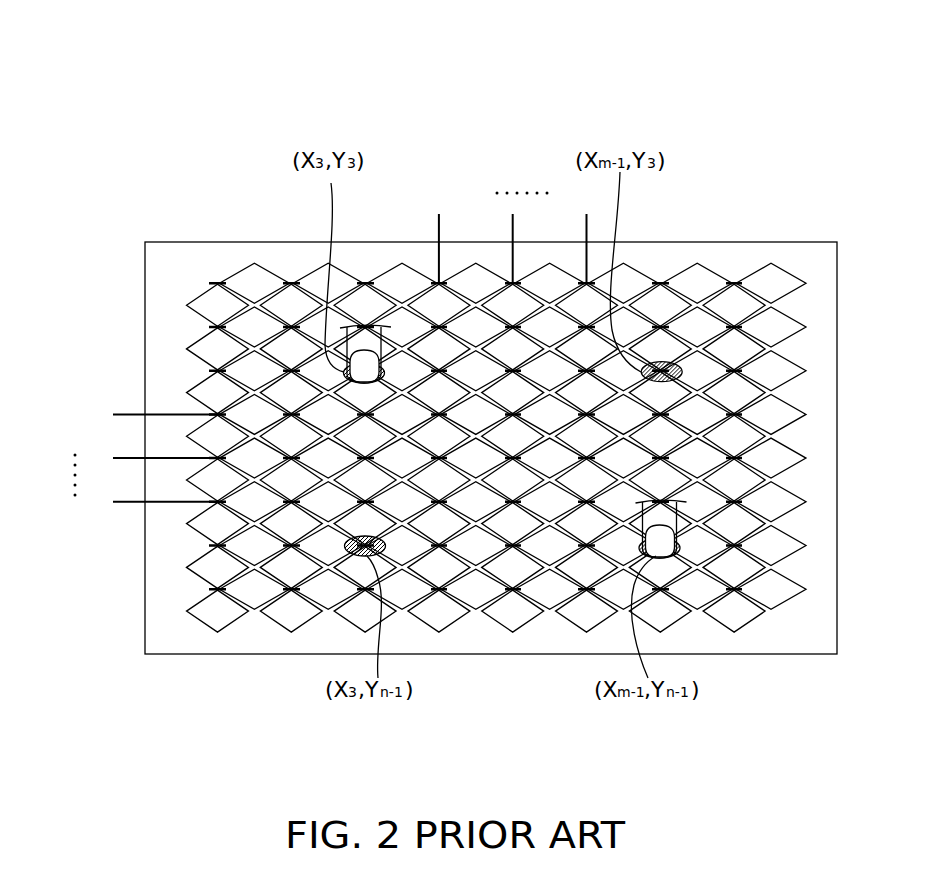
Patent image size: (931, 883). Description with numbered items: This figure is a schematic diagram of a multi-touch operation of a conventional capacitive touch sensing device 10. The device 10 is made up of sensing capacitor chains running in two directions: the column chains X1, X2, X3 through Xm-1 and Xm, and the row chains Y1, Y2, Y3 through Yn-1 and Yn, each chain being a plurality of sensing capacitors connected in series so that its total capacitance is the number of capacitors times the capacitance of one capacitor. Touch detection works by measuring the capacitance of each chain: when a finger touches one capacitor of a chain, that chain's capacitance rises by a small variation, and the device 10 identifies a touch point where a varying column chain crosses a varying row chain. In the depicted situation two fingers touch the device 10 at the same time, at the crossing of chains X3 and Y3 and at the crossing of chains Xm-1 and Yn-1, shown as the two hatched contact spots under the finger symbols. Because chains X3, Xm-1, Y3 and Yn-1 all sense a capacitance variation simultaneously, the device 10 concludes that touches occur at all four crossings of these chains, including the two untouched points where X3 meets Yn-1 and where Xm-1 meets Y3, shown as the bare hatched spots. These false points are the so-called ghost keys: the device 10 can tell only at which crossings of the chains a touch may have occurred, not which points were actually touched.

The capacitive touch sensing device 10 is at (732, 104).
The sensing capacitor chain X1 is at (218, 283).
The sensing capacitor chain X2 is at (291, 283).
The sensing capacitor chain X3 is at (365, 283).
The sensing capacitor chain Xm-1 is at (660, 283).
The sensing capacitor chain Xm is at (734, 283).
The sensing capacitor chain Y1 is at (221, 283).
The sensing capacitor chain Y2 is at (221, 327).
The sensing capacitor chain Y3 is at (221, 371).
The sensing capacitor chain Yn-1 is at (221, 546).
The sensing capacitor chain Yn is at (221, 589).